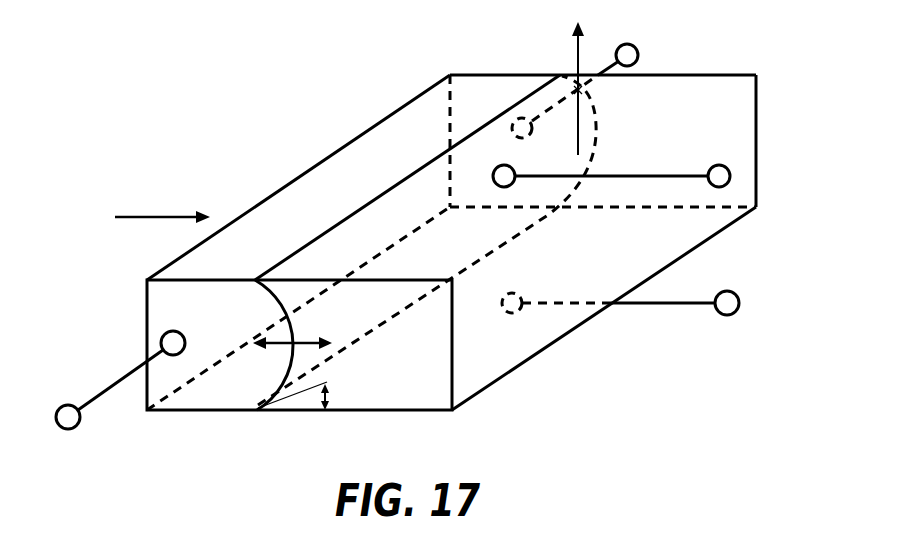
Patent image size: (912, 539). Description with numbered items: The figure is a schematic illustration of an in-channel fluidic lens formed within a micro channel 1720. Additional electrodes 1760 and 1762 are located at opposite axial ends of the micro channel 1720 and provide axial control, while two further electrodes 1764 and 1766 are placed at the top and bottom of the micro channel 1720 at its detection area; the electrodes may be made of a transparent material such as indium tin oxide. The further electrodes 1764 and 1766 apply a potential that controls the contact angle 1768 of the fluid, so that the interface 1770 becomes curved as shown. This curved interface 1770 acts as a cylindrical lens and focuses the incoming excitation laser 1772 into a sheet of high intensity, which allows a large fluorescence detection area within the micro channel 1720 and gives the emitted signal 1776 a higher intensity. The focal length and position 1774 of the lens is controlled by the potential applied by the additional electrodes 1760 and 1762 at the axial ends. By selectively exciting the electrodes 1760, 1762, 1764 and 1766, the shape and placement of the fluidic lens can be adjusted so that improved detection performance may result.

The micro channel 1720 is at (770, 66).
The additional electrode 1760 is at (64, 405).
The additional electrode 1762 is at (640, 52).
The further electrode 1764 is at (731, 178).
The further electrode 1766 is at (739, 306).
The contact angle 1768 is at (297, 403).
The interface 1770 is at (258, 400).
The incoming excitation laser 1772 is at (163, 213).
The focal length and position 1774 is at (303, 340).
The emitted signal 1776 is at (575, 52).